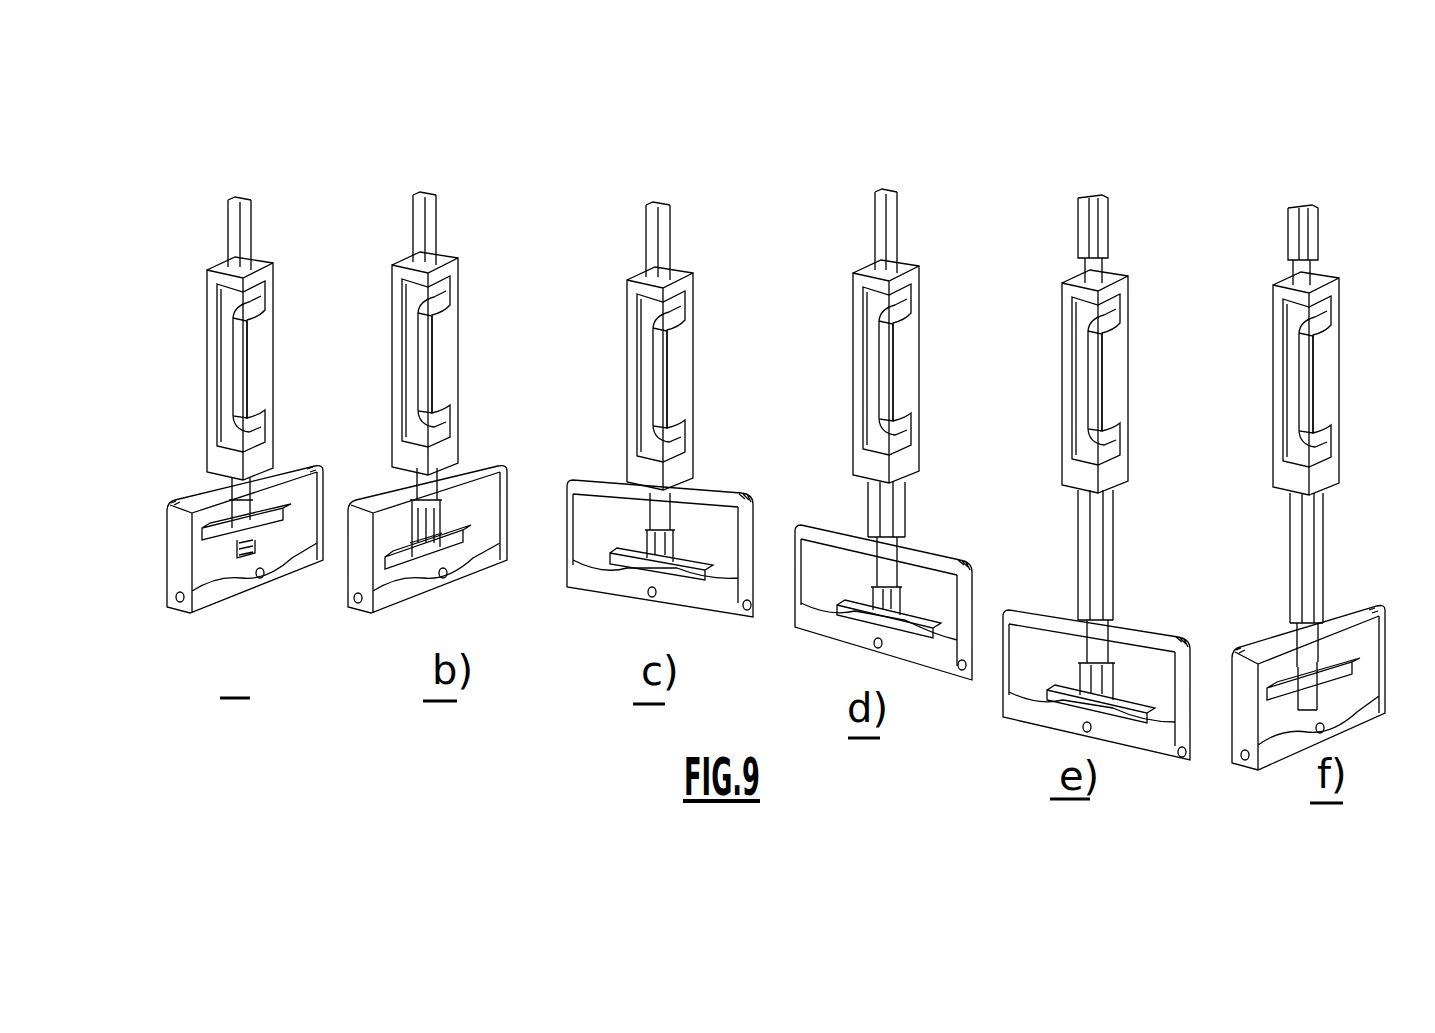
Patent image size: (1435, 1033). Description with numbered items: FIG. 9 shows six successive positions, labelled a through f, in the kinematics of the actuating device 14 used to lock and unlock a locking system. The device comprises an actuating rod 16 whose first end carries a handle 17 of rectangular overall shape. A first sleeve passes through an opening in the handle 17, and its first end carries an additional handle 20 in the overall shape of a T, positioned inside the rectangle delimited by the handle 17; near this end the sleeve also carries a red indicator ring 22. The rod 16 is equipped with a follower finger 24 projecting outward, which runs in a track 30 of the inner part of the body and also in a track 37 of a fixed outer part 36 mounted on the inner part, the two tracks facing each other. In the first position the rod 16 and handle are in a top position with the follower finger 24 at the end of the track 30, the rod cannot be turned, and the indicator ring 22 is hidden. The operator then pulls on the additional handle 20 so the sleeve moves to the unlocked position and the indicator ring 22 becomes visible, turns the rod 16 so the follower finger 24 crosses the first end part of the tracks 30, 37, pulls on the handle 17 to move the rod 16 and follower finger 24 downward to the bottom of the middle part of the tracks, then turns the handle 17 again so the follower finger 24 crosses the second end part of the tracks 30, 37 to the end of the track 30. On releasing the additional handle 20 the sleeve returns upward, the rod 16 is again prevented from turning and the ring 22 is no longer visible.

The actuating device 14 is at (258, 165).
The actuating rod 16 is at (274, 210).
The handle 17 is at (231, 568).
The additional handle 20 is at (795, 594).
The indicator ring 22 is at (487, 454).
The follower finger 24 is at (806, 362).
The track 30 is at (195, 364).
The track 37 is at (195, 364).
The fixed outer part 36 is at (271, 368).